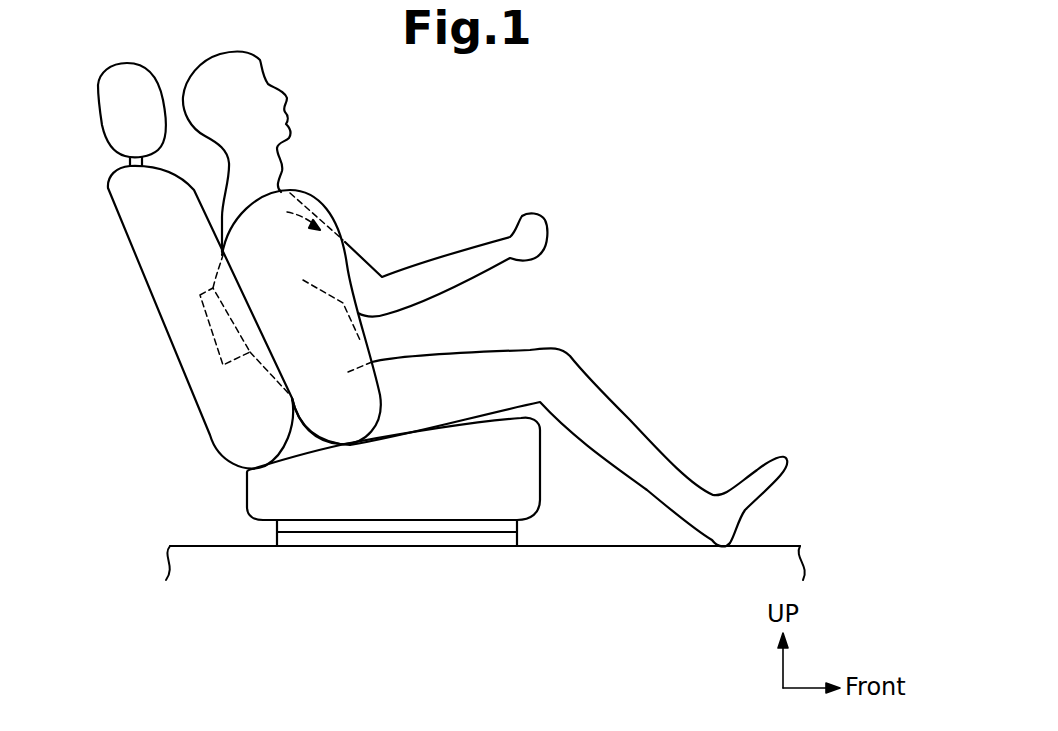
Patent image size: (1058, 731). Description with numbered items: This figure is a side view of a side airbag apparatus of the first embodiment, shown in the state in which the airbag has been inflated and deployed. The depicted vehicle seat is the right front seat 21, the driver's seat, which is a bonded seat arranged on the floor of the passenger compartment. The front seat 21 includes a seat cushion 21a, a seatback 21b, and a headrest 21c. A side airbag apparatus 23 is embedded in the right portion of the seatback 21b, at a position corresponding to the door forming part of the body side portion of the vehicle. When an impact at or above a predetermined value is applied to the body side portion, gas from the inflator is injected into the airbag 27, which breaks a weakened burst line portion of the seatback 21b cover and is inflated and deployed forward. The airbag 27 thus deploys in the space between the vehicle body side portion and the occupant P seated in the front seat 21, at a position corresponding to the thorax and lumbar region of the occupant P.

The front seat 21 is at (128, 231).
The seat cushion 21a is at (247, 490).
The seatback 21b is at (177, 344).
The headrest 21c is at (100, 130).
The side airbag apparatus 23 is at (184, 313).
The airbag 27 is at (323, 210).
The occupant P is at (243, 52).